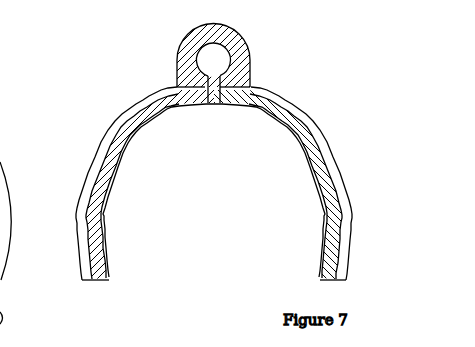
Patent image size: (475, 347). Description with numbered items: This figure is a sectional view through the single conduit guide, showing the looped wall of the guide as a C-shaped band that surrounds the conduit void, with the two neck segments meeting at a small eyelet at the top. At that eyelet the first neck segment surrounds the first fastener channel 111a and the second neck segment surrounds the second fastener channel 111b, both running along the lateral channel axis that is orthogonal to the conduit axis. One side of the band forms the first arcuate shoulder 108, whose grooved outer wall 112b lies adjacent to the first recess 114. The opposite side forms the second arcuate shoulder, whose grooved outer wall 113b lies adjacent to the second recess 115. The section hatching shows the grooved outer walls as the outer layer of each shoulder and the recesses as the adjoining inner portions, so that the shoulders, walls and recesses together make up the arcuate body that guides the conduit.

The first arcuate shoulder 108 is at (125, 67).
The first fastener channel 111a is at (247, 93).
The second fastener channel 111b is at (183, 96).
The grooved outer wall 112b is at (343, 188).
The grooved outer wall 113b is at (100, 153).
The first recess 114 is at (350, 230).
The second recess 115 is at (92, 224).